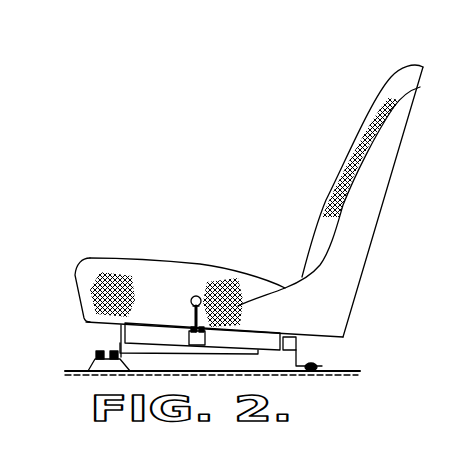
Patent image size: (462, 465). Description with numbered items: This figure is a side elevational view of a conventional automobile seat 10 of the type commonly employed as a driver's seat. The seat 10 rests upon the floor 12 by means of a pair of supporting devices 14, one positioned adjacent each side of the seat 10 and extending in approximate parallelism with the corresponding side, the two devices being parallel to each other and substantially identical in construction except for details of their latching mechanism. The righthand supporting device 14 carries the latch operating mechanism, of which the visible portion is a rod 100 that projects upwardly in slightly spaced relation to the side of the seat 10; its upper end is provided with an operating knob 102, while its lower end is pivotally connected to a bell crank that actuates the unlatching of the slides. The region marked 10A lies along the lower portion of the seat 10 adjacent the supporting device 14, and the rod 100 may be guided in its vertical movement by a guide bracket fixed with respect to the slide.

The seat 10 is at (217, 236).
The seat frame rail 10A is at (202, 336).
The floor 12 is at (358, 372).
The supporting device 14 is at (118, 336).
The rod 100 is at (194, 318).
The operating knob 102 is at (199, 297).